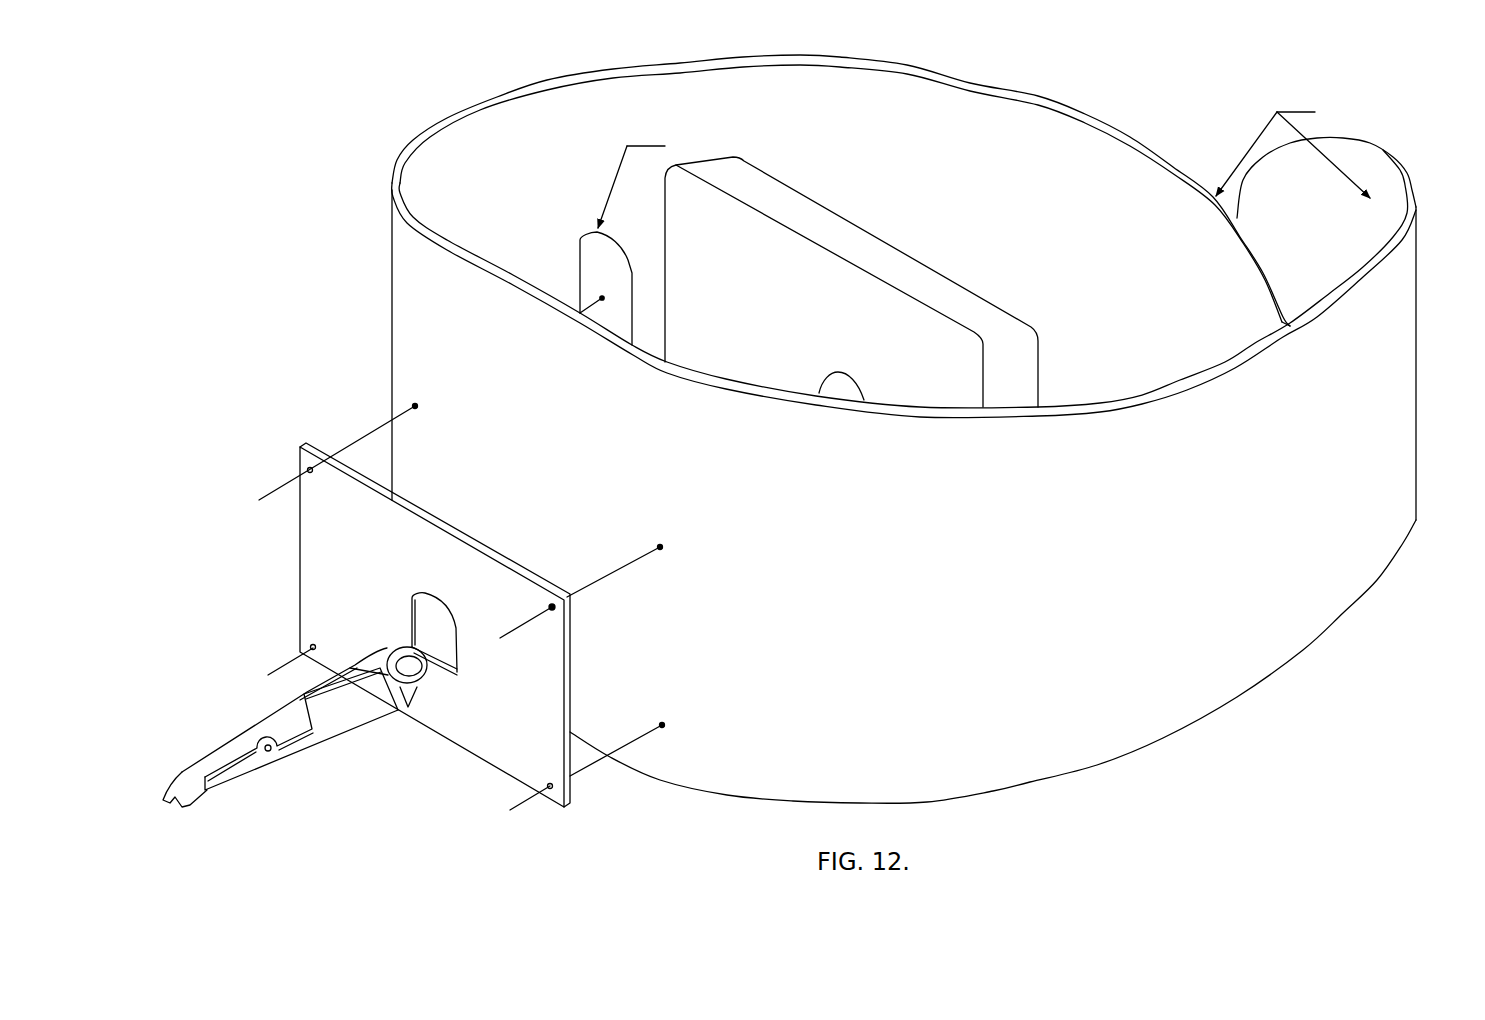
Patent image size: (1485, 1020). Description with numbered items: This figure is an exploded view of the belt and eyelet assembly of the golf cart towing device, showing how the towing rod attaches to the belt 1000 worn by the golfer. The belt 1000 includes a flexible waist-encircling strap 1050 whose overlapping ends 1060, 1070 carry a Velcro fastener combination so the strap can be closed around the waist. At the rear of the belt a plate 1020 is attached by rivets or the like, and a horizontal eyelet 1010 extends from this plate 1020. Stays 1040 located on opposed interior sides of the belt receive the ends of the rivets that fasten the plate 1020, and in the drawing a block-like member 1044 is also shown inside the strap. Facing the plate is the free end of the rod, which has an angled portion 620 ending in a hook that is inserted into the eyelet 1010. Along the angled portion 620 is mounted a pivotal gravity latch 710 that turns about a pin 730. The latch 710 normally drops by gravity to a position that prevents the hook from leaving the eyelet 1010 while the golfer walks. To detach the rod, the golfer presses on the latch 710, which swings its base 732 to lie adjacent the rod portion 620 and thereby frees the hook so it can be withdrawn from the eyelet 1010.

The belt 1000 is at (1018, 829).
The eyelet 1010 is at (446, 678).
The plate 1020 is at (460, 754).
The stays 1040 is at (580, 243).
The bracket block 1044 is at (941, 284).
The flexible waist-encircling strap 1050 is at (1313, 625).
The overlapping end 1060 is at (1247, 250).
The overlapping end 1070 is at (1360, 138).
The angled portion 620 is at (208, 757).
The gravity latch 710 is at (360, 725).
The pin 730 is at (268, 753).
The base 732 is at (323, 747).